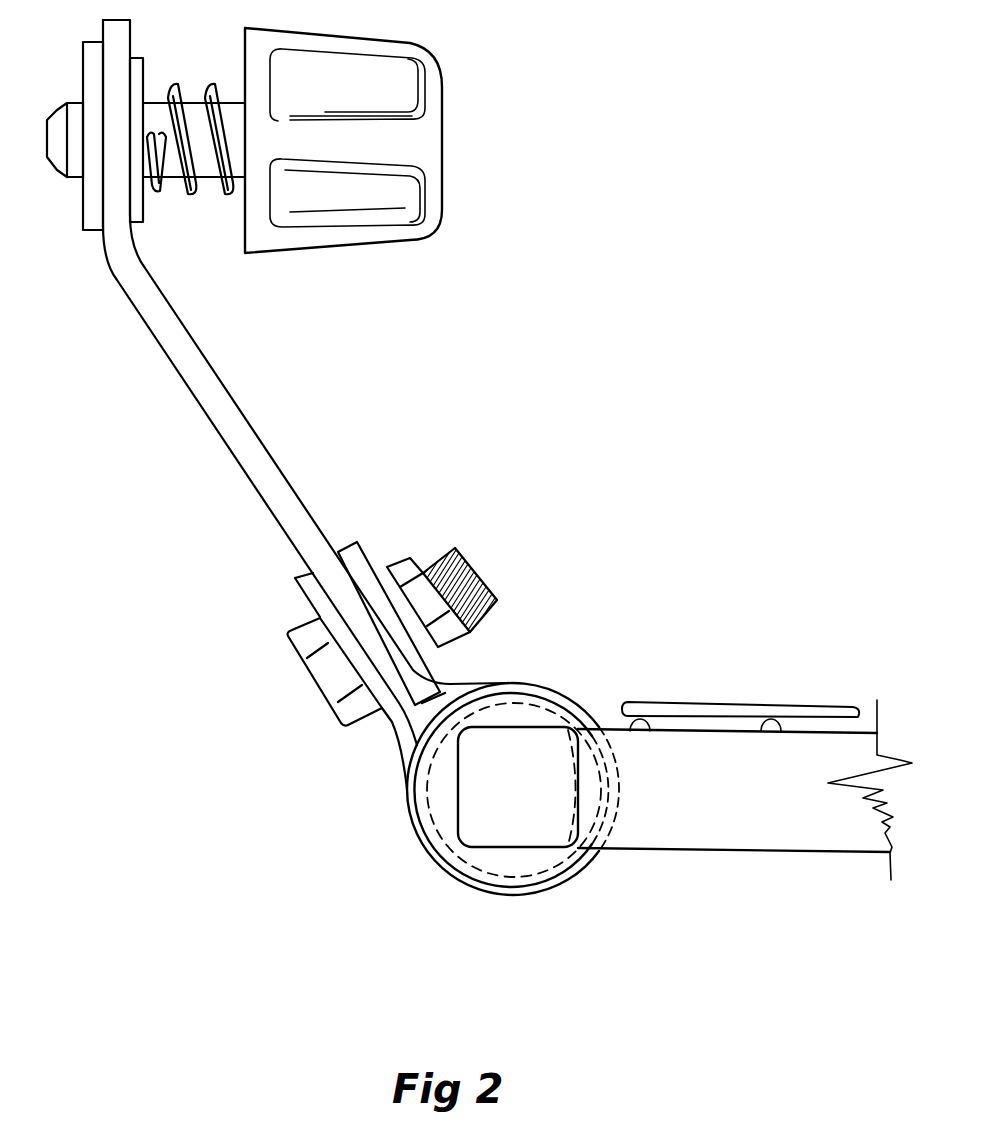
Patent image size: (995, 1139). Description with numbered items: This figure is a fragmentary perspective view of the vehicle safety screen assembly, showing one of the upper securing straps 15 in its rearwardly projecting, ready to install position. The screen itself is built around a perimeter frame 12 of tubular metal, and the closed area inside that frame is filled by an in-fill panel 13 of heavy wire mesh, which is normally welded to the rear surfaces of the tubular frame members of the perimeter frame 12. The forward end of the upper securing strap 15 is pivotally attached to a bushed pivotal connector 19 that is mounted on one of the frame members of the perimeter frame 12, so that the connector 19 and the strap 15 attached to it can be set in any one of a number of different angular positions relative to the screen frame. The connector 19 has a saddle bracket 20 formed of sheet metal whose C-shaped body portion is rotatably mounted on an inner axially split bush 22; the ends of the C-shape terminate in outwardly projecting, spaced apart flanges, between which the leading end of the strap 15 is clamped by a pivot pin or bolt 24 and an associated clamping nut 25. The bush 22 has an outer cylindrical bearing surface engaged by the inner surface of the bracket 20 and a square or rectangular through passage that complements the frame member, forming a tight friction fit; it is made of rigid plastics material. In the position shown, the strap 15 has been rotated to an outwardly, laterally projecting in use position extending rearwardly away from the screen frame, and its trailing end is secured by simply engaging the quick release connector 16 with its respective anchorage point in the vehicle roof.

The perimeter frame 12 is at (713, 828).
The in-fill panel 13 is at (797, 710).
The upper securing strap 15 is at (210, 395).
The quick release connector 16 is at (417, 137).
The bushed pivotal connector 19 is at (547, 658).
The saddle bracket 20 is at (422, 848).
The axially split bush 22 is at (516, 862).
The pivot pin or bolt 24 is at (333, 682).
The clamping nut 25 is at (402, 572).